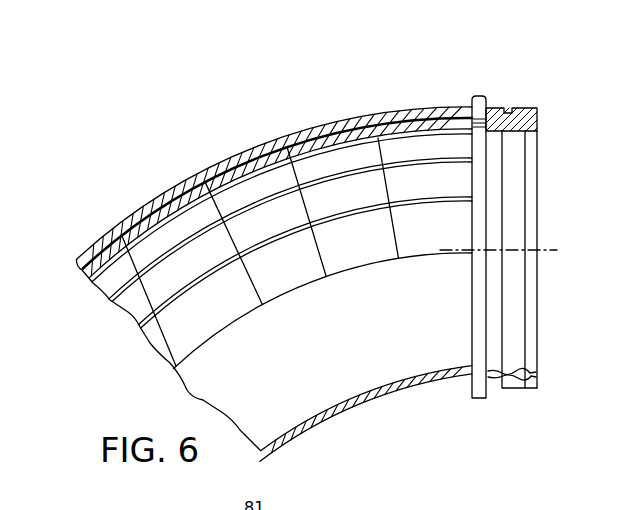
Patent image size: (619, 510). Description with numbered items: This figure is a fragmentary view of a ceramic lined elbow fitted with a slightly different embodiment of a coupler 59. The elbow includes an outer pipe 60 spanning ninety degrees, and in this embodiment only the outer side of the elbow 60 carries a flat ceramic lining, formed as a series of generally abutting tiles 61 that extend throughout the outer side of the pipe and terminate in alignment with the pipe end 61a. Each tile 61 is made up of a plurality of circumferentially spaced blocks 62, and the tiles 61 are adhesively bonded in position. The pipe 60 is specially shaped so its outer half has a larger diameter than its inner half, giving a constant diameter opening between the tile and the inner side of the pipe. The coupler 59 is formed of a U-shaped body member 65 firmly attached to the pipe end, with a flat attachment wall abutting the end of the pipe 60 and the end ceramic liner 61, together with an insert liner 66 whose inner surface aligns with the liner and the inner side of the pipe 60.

The coupler 59 is at (518, 390).
The outer pipe 60 is at (355, 402).
The tiles 61 is at (233, 328).
The pipe end 61a is at (492, 122).
The circumferentially spaced blocks 62 is at (428, 227).
The body member 65 is at (518, 108).
The insert liner 66 is at (520, 135).